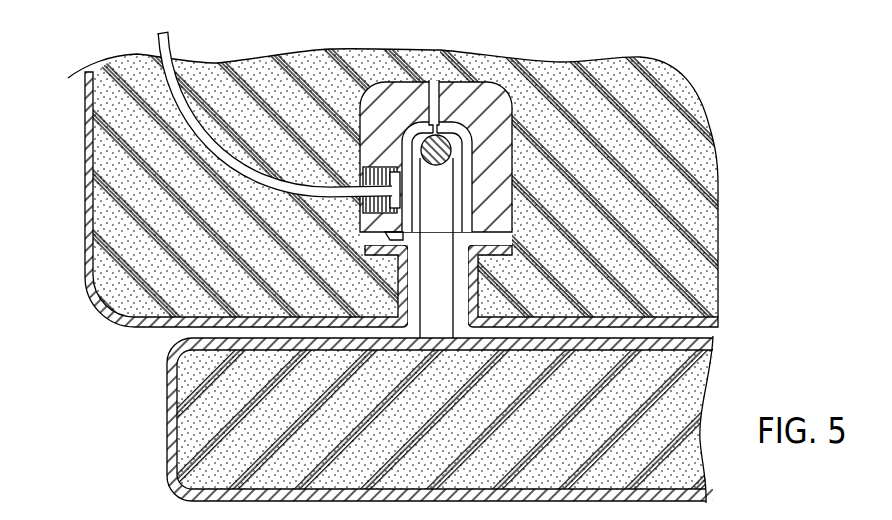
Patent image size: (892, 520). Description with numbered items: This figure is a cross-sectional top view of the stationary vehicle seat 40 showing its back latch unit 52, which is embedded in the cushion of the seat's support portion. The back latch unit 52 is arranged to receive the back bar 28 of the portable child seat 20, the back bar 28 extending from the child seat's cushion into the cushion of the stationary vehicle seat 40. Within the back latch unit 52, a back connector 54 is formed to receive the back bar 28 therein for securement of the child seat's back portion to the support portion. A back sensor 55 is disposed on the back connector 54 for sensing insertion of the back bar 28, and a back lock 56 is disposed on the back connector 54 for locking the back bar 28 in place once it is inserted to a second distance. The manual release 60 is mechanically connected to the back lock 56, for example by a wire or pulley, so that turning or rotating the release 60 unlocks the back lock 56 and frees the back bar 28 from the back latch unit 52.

The portable child seat 20 is at (458, 449).
The back bar 28 is at (450, 275).
The stationary vehicle seat 40 is at (252, 244).
The back latch unit 52 is at (488, 169).
The back connector 54 is at (383, 100).
The back sensor 55 is at (435, 93).
The back lock 56 is at (425, 192).
The manual release 60 is at (192, 110).